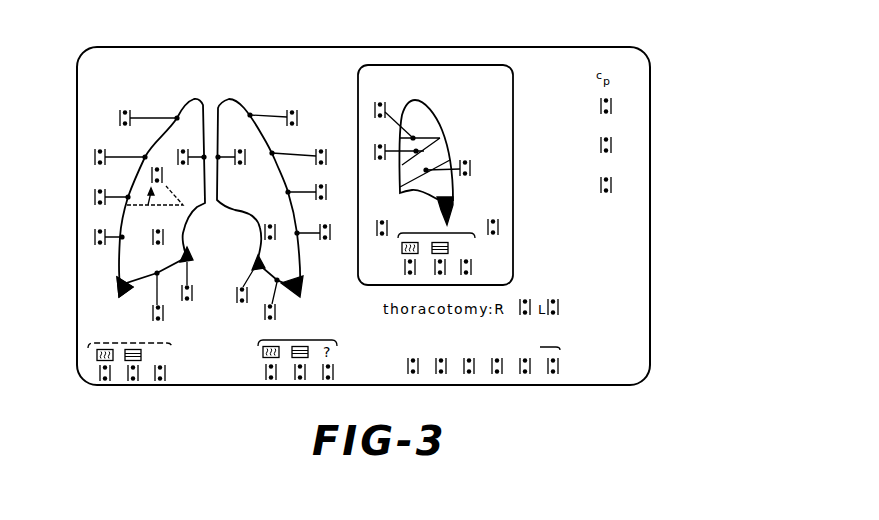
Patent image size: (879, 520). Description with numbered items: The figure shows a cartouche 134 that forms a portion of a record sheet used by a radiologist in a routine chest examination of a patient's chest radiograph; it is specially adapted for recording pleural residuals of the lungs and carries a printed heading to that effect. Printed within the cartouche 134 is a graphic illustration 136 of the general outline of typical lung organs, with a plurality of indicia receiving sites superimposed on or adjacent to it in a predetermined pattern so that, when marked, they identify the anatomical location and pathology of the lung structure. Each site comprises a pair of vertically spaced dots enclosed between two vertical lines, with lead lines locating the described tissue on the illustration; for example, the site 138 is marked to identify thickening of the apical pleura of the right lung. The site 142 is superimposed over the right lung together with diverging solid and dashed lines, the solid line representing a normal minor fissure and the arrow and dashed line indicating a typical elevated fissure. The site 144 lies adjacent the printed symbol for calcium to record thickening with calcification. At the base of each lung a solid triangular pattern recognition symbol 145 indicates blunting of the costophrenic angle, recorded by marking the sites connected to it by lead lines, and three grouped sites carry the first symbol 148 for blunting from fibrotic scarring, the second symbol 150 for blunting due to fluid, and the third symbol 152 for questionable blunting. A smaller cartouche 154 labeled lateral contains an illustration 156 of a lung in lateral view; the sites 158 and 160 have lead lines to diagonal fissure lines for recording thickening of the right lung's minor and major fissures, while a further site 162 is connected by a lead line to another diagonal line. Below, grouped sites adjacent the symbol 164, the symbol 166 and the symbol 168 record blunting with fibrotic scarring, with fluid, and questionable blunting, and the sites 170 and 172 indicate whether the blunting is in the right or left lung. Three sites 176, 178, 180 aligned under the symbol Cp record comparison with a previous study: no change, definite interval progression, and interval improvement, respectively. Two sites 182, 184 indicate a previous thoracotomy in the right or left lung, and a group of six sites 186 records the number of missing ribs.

The cartouche 134 is at (170, 47).
The graphic illustration 136 is at (192, 101).
The site 138 is at (120, 118).
The site 142 is at (165, 178).
The site 144 is at (168, 236).
The solid triangular pattern recognition symbol 145 is at (117, 284).
The first symbol 148 is at (97, 355).
The second symbol 150 is at (133, 362).
The third symbol 152 is at (170, 353).
The smaller cartouche 154 is at (426, 65).
The illustration 156 is at (432, 110).
The site 158 is at (375, 110).
The site 160 is at (375, 152).
The lateral position key 162 is at (470, 168).
The symbol 164 is at (402, 254).
The symbol 166 is at (436, 256).
The symbol 168 is at (474, 248).
The site 170 is at (374, 212).
The site 172 is at (500, 231).
The site 176 is at (614, 108).
The site 178 is at (614, 147).
The site 180 is at (614, 185).
The site 182 is at (523, 296).
The site 184 is at (560, 300).
The group of six sites 186 is at (418, 341).